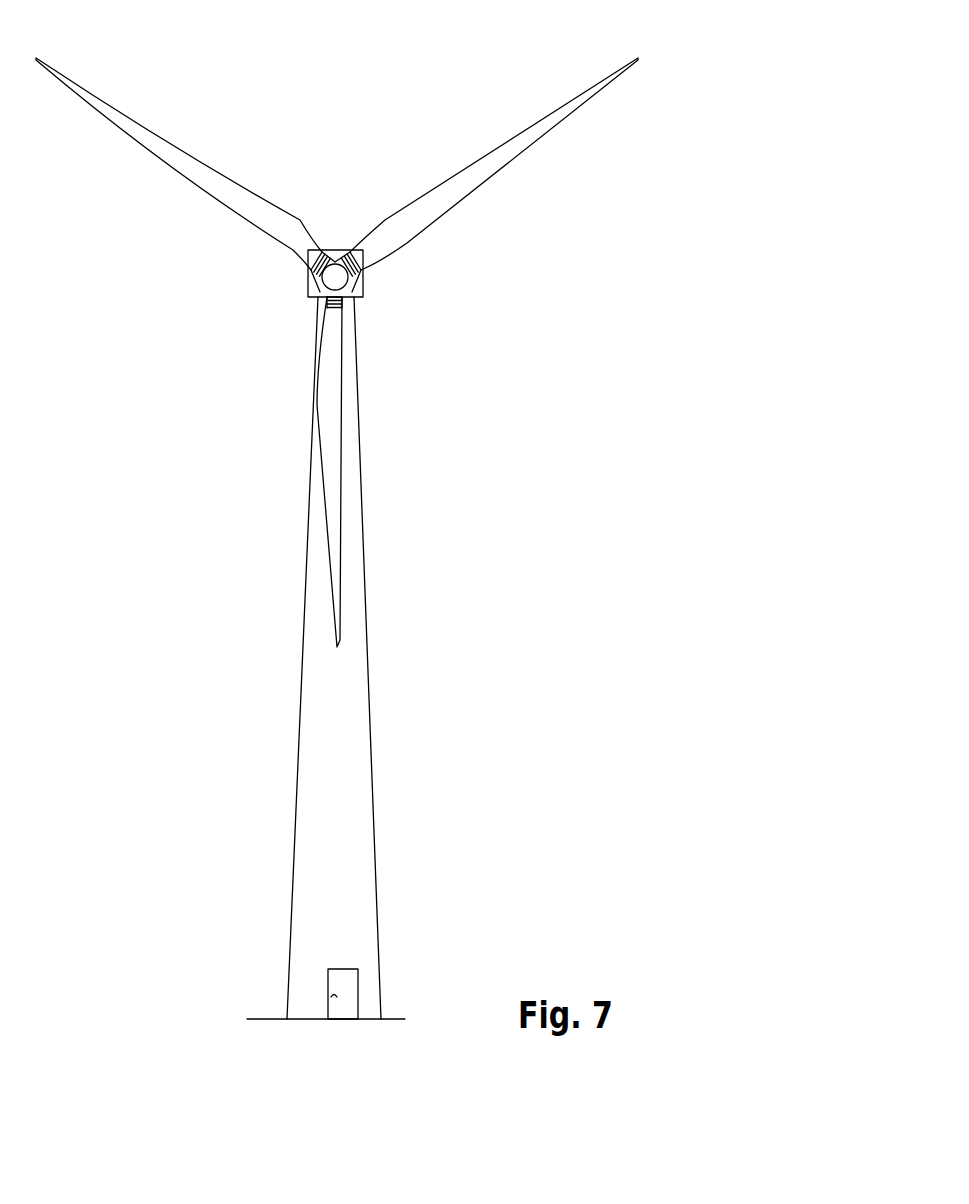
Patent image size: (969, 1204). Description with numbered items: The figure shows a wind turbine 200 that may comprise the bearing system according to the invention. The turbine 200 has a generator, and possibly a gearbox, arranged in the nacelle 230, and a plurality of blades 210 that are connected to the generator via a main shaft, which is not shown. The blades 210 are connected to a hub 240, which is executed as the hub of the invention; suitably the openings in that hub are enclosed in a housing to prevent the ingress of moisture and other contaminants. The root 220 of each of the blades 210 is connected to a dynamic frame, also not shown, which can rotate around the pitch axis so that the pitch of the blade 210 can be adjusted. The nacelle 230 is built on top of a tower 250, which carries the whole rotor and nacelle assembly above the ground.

The wind turbine 200 is at (497, 60).
The blade 210 is at (340, 593).
The root 220 is at (320, 307).
The nacelle 230 is at (363, 295).
The hub 240 is at (307, 293).
The tower 250 is at (362, 728).